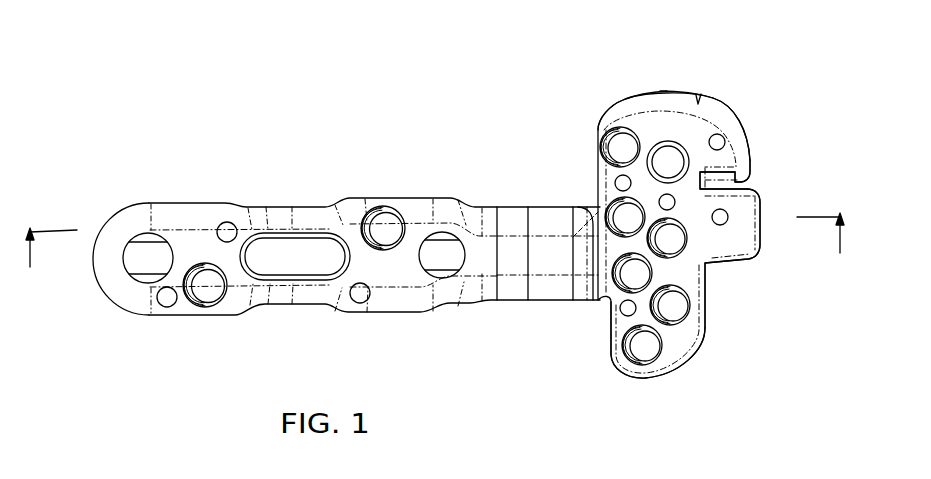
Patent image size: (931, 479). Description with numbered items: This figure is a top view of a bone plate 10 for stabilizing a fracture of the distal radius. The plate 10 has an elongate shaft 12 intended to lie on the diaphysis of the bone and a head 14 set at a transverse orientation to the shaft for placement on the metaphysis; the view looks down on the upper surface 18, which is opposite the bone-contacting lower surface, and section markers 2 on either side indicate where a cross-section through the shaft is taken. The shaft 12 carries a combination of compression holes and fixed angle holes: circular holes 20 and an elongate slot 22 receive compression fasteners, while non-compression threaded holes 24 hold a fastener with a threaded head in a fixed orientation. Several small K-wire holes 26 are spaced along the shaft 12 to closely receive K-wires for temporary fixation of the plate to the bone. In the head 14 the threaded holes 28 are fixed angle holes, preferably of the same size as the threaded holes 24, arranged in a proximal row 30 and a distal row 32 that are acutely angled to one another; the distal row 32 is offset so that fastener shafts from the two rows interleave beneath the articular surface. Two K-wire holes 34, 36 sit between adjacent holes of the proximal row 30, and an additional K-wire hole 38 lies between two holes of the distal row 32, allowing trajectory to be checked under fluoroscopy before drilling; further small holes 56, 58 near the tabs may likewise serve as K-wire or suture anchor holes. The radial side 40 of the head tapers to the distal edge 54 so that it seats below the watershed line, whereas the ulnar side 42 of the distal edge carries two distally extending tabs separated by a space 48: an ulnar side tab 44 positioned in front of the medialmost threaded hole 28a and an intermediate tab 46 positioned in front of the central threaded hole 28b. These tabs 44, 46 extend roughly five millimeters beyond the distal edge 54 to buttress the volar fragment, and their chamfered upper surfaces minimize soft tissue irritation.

The section line 2- 2 is at (431, 259).
The bone plate 10 is at (346, 204).
The shaft 12 is at (338, 207).
The head 14 is at (694, 352).
The upper surface 18 is at (418, 301).
The circular holes 20 is at (148, 253).
The elongate slots 22 is at (280, 247).
The threaded holes 24 is at (385, 218).
The K-wire holes 26 is at (222, 227).
The threaded holes 28 is at (626, 280).
The medialmost threaded hole 28a is at (672, 150).
The central threaded hole 28b is at (672, 243).
The proximal row 30 is at (602, 112).
The distal row 32 is at (667, 86).
The K-wire hole 34 is at (616, 186).
The K-wire hole 36 is at (624, 313).
The K-wire hole 38 is at (662, 196).
The radial side 40 is at (704, 322).
The ulnar side 42 is at (734, 102).
The ulnar side tab 44 is at (742, 140).
The intermediate tab 46 is at (756, 213).
The space 48 is at (750, 178).
The distal edge 54 is at (707, 293).
The small hole 56 is at (722, 133).
The small hole 58 is at (722, 222).